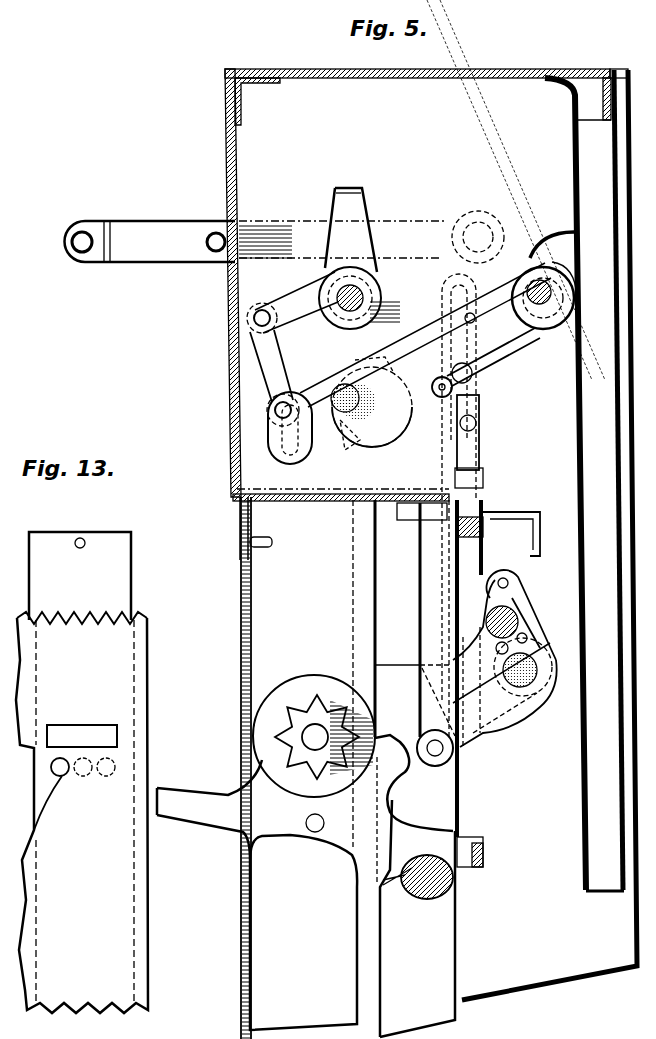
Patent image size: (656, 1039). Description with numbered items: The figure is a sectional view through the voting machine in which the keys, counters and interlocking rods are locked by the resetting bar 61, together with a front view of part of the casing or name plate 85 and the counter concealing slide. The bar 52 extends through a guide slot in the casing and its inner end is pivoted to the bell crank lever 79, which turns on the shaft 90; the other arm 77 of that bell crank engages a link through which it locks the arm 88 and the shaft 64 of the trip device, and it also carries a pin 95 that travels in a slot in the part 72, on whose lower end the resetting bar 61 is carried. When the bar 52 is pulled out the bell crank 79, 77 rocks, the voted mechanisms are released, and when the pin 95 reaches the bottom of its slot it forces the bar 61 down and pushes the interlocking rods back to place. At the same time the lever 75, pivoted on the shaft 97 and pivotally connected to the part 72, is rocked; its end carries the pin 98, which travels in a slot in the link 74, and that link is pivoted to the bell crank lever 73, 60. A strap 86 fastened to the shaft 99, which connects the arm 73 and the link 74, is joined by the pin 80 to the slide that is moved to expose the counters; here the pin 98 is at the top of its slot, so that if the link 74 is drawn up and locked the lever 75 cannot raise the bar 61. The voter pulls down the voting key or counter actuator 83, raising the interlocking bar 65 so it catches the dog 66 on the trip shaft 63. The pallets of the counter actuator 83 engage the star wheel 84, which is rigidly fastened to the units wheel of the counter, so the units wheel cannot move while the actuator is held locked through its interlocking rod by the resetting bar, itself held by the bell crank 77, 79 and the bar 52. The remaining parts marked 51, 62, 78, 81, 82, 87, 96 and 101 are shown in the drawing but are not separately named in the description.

In FIG. 5, the casing 51 is at (242, 152).
In FIG. 5, the bar 52 is at (256, 223).
In FIG. 5, the bell crank lever 60 is at (360, 205).
In FIG. 5, the resetting bar 61 is at (480, 480).
In FIG. 5, the roller 62 is at (518, 617).
In FIG. 5, the trip shaft 63 is at (528, 636).
In FIG. 5, the shaft of the trip device 64 is at (553, 682).
In FIG. 5, the interlocking bar 65 is at (478, 545).
In FIG. 5, the dog 66 is at (520, 592).
In FIG. 5, the part with slot 72 is at (470, 450).
In FIG. 5, the bell crank lever arm 73 is at (319, 300).
In FIG. 5, the link 74 is at (283, 366).
In FIG. 5, the lever 75 is at (412, 428).
In FIG. 5, the bell crank lever arm 77 is at (505, 352).
In FIG. 5, the link 78 is at (438, 320).
In FIG. 5, the bell crank lever 79 is at (543, 243).
In FIG. 5, the pin 80 is at (272, 545).
In FIG. 13, the pin 80 is at (82, 538).
In FIG. 5, the lever 81 is at (500, 720).
In FIG. 5, the pawl plate 82 is at (415, 886).
In FIG. 5, the counter actuator 83 is at (306, 838).
In FIG. 5, the star wheel 84 is at (305, 692).
In FIG. 5, the casing or name plate 85 is at (241, 614).
In FIG. 13, the casing or name plate 85 is at (82, 815).
In FIG. 5, the strap 86 is at (250, 522).
In FIG. 5, the spring 87 is at (538, 505).
In FIG. 5, the arm 88 is at (500, 740).
In FIG. 5, the shaft 90 is at (560, 300).
In FIG. 5, the pin 95 is at (475, 373).
In FIG. 5, the stud 96 is at (478, 237).
In FIG. 5, the shaft 97 is at (354, 432).
In FIG. 5, the pin 98 is at (280, 412).
In FIG. 5, the shaft 99 is at (248, 318).
In FIG. 5, the plate 101 is at (252, 612).
In FIG. 13, the plate 101 is at (82, 578).